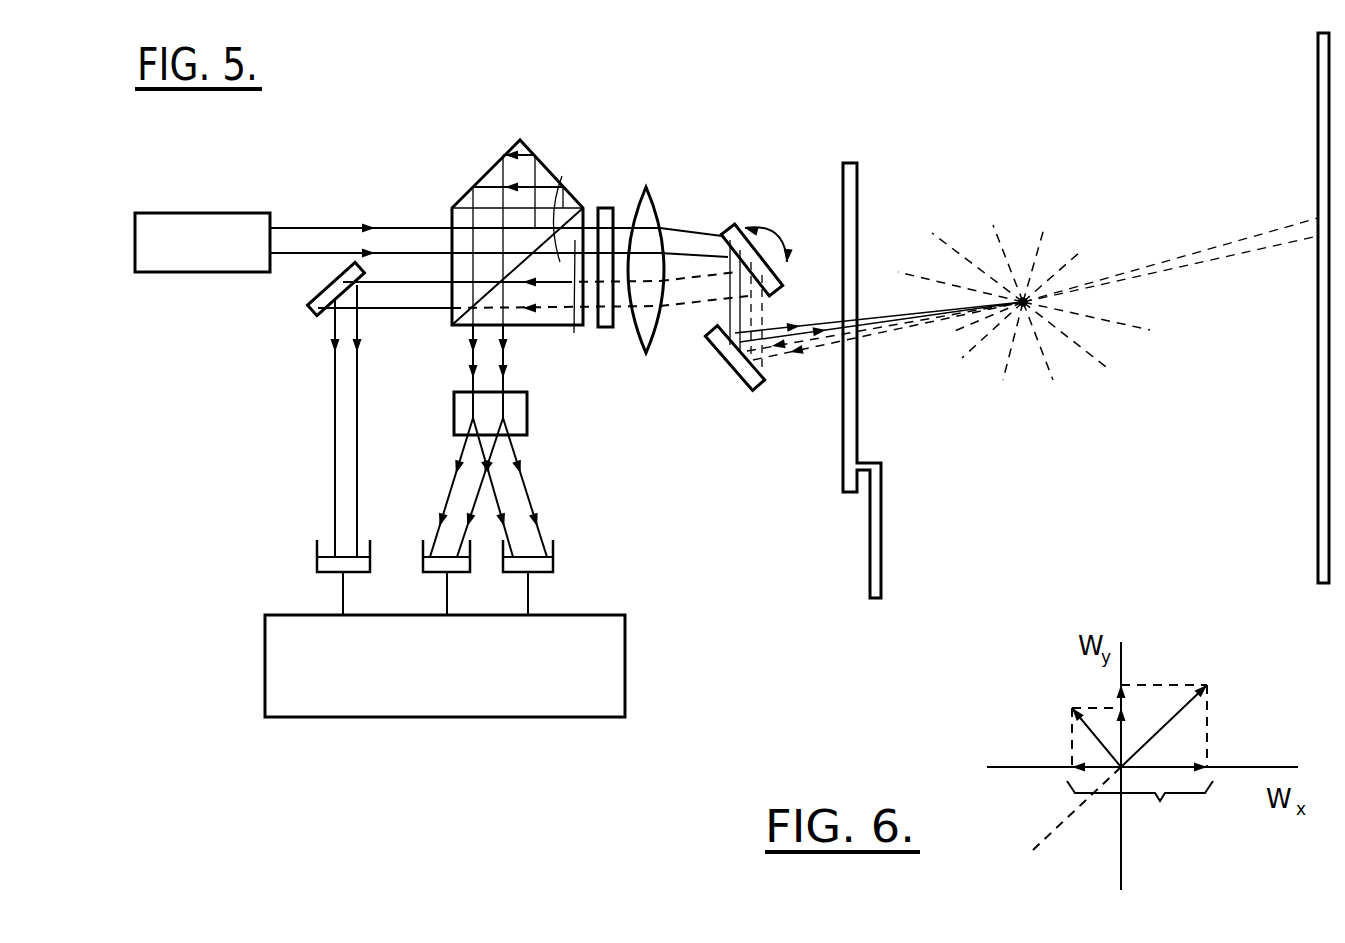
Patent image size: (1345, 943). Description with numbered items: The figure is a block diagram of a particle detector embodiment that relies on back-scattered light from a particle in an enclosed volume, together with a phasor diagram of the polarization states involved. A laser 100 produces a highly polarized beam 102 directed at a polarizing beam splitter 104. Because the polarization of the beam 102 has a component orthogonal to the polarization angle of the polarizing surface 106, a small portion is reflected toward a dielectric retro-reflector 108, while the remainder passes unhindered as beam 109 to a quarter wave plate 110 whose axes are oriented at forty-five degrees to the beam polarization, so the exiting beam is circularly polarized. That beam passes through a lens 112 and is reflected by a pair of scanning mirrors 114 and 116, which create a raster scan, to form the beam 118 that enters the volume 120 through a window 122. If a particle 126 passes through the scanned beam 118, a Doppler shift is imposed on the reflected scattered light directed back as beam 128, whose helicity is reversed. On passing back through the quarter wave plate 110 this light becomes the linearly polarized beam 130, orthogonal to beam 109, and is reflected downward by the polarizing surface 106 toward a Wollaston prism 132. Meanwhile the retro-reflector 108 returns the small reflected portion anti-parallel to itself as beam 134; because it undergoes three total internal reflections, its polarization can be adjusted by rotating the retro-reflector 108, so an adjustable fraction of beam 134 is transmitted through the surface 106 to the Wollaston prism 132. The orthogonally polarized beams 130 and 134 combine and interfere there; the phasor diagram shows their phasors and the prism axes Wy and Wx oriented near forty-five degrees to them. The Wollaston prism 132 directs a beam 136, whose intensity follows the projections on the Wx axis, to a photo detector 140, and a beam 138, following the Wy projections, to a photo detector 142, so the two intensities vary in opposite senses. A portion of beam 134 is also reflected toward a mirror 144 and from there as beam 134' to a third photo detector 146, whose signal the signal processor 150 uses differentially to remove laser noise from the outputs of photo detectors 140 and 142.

In FIG. 5, the laser 100 is at (203, 213).
In FIG. 5, the beam 102 is at (318, 226).
In FIG. 5, the polarizing beam splitter 104 is at (452, 212).
In FIG. 5, the polarizing surface 106 is at (562, 176).
In FIG. 5, the dielectric retro-reflector 108 is at (522, 148).
In FIG. 5, the beam 109 is at (583, 301).
In FIG. 5, the quarter wave plate 110 is at (618, 327).
In FIG. 5, the lens 112 is at (655, 215).
In FIG. 5, the scanning mirror 114 is at (728, 225).
In FIG. 5, the scanning mirror 116 is at (742, 382).
In FIG. 5, the beam 118 is at (773, 335).
In FIG. 5, the volume 120 is at (1046, 186).
In FIG. 5, the window 122 is at (858, 178).
In FIG. 5, the particle 126 is at (1040, 318).
In FIG. 5, the beam 128 is at (875, 343).
In FIG. 5, the beam 130 is at (543, 312).
In FIG. 6, the beam 130 is at (1090, 738).
In FIG. 5, the Wollaston prism 132 is at (518, 412).
In FIG. 5, the beam 134 is at (444, 343).
In FIG. 6, the beam 134 is at (1201, 727).
In FIG. 5, the beam 134' is at (296, 421).
In FIG. 5, the beam 136 is at (515, 505).
In FIG. 6, the beam 136 is at (1140, 806).
In FIG. 5, the beam 138 is at (465, 505).
In FIG. 6, the beam 138 is at (1125, 737).
In FIG. 5, the photo detector 140 is at (540, 570).
In FIG. 5, the photo detector 142 is at (437, 565).
In FIG. 5, the mirror 144 is at (318, 290).
In FIG. 5, the third photo detector 146 is at (330, 562).
In FIG. 5, the signal processor 150 is at (265, 657).